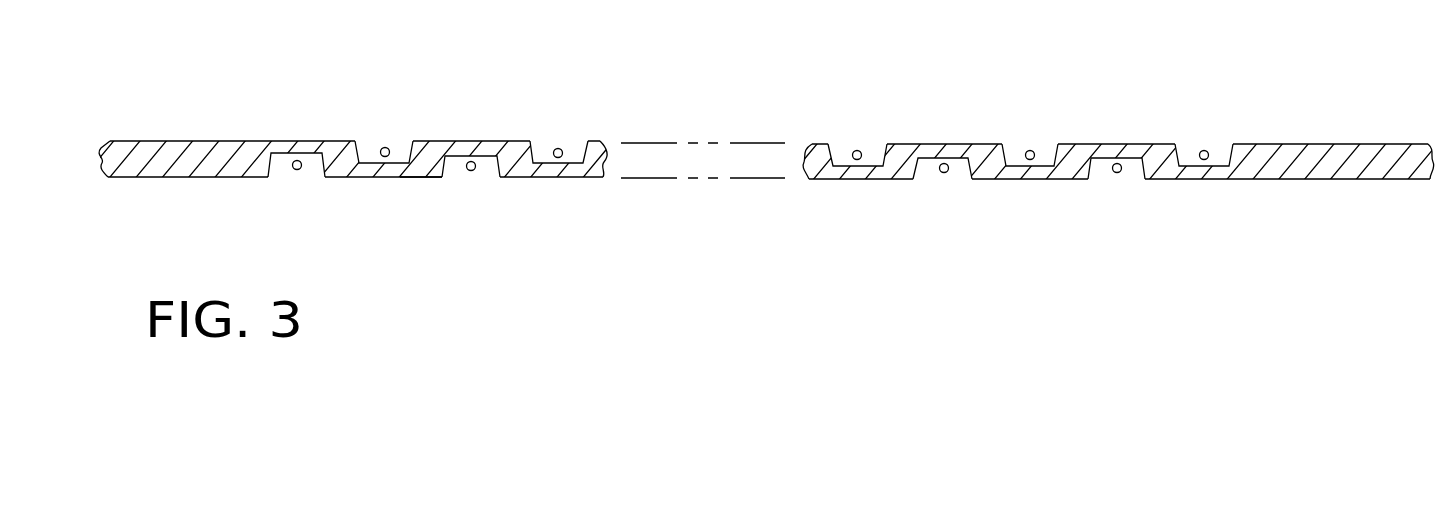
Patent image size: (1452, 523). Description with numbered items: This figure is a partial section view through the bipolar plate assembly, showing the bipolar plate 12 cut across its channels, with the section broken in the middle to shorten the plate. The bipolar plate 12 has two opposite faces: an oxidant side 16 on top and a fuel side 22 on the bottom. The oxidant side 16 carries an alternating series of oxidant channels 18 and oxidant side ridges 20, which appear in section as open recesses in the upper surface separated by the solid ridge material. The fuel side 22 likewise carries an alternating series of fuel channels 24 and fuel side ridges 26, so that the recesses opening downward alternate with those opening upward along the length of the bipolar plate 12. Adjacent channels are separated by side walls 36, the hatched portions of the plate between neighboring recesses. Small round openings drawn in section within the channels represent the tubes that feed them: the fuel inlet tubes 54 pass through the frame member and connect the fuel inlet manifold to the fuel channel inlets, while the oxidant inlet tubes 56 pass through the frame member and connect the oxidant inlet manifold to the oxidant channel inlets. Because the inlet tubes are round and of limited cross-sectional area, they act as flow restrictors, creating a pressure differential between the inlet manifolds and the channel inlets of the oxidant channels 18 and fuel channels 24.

The bipolar plate 12 is at (1262, 155).
The oxidant side 16 is at (1047, 96).
The oxidant channels 18 is at (842, 143).
The oxidant side ridges 20 is at (931, 143).
The fuel side 22 is at (412, 210).
The fuel channels 24 is at (487, 170).
The fuel side ridges 26 is at (425, 180).
The side walls 36 is at (423, 148).
The fuel inlet tubes 54 is at (1117, 176).
The oxidant inlet tubes 56 is at (1204, 148).